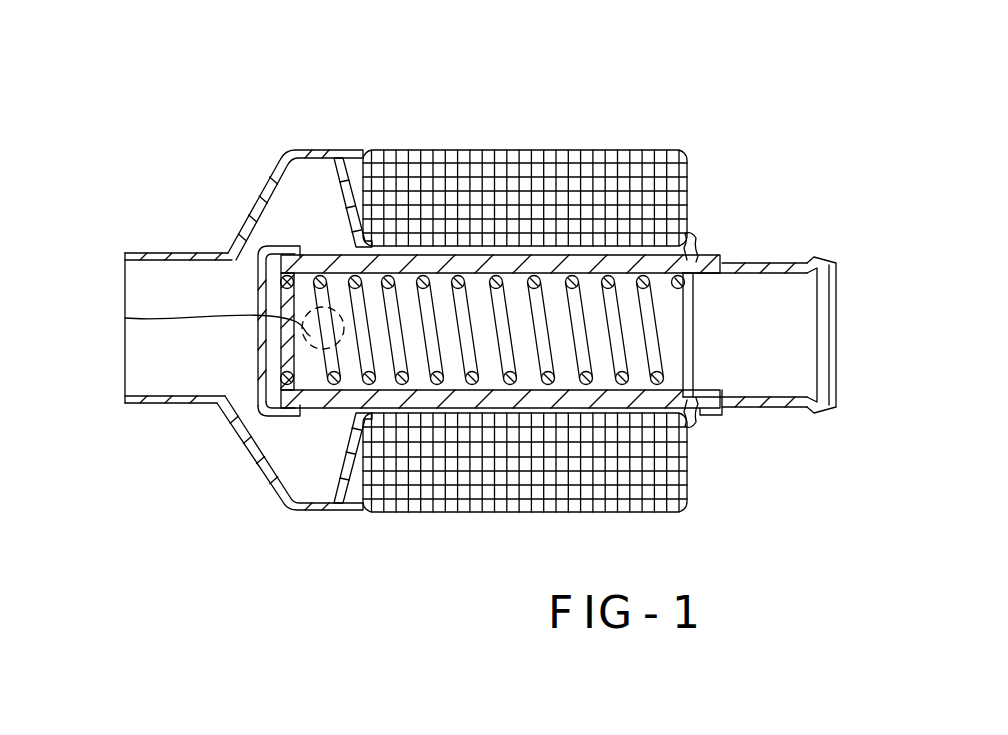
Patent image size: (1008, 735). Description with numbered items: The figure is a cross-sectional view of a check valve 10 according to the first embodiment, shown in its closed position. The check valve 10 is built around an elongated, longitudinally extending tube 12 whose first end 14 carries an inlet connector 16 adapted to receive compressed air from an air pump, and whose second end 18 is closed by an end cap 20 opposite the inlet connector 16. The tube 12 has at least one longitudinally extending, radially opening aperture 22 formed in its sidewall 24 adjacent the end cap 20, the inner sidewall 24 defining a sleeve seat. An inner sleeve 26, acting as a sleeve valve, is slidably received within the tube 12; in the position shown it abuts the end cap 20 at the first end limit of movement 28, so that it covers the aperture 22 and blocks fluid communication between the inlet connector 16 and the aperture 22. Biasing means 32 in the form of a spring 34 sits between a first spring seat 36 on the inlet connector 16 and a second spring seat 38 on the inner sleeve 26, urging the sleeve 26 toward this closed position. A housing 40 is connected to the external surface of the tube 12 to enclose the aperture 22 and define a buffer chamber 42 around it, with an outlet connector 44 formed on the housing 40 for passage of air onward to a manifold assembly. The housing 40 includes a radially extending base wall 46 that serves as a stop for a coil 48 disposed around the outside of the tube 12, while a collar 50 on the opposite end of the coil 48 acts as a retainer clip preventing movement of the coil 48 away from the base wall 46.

The check valve 10 is at (135, 84).
The elongated tube 12 is at (568, 258).
The first end 14 is at (710, 260).
The inlet connector 16 is at (781, 408).
The second end 18 is at (336, 277).
The end cap 20 is at (255, 357).
The aperture 22 is at (125, 318).
The sidewall 24 is at (333, 275).
The inner sleeve 26 is at (491, 392).
The first end limit of movement 28 is at (280, 393).
The biasing means 32 is at (461, 372).
The spring 34 is at (445, 266).
The first spring seat 36 is at (678, 380).
The second spring seat 38 is at (300, 318).
The housing 40 is at (268, 480).
The buffer chamber 42 is at (291, 172).
The outlet connector 44 is at (137, 404).
The base wall 46 is at (340, 157).
The coil 48 is at (550, 152).
The collar 50 is at (690, 232).